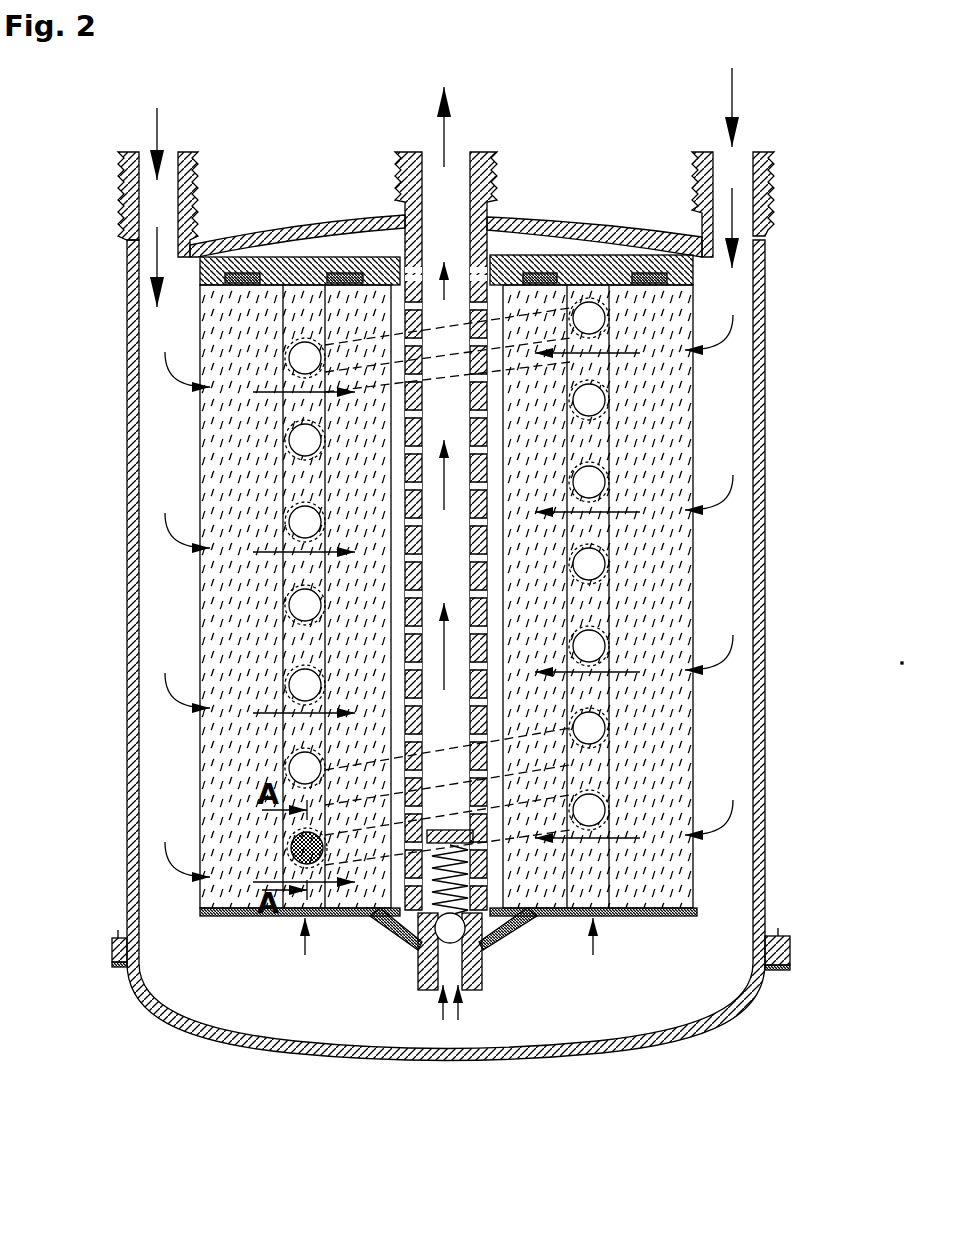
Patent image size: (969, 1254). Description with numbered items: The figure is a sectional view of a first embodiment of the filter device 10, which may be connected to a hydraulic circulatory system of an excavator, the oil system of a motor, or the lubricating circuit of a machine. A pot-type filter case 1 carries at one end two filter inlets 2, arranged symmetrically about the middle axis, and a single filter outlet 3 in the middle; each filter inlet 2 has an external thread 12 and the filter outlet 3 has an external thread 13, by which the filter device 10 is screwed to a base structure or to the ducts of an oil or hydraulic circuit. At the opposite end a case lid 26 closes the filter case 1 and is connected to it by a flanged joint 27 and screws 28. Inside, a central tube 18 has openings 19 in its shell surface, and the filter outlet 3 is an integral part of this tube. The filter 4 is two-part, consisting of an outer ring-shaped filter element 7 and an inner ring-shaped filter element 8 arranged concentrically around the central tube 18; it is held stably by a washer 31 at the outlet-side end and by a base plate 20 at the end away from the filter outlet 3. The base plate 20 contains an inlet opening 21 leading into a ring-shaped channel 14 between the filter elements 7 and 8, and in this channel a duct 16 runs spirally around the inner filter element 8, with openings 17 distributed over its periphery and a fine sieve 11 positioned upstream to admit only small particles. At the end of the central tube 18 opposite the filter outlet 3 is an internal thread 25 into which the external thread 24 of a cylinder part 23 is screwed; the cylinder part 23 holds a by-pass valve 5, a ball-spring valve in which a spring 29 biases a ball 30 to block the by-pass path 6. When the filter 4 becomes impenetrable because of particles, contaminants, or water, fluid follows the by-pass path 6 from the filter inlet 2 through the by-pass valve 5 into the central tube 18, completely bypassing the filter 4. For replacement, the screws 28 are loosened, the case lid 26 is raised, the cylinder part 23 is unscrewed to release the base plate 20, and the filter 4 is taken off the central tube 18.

The filter case 1 is at (762, 400).
The filter inlet 2 is at (158, 125).
The filter outlet 3 is at (446, 135).
The filter 4 is at (205, 470).
The by-pass valve 5 is at (434, 933).
The by-pass path 6 is at (440, 1010).
The outer filter element 7 is at (215, 637).
The inner filter element 8 is at (560, 590).
The filter device 10 is at (612, 102).
The sieve 11 is at (293, 842).
The external thread 12 is at (195, 185).
The external thread 13 is at (478, 515).
The ring-shaped channel 14 is at (302, 948).
The duct 16 is at (605, 455).
The openings 17 is at (305, 563).
The central tube 18 is at (488, 205).
The openings 19 is at (472, 572).
The base plate 20 is at (233, 916).
The inlet opening 21 is at (322, 917).
The cylinder part 23 is at (422, 966).
The external thread 24 is at (480, 905).
The internal thread 25 is at (483, 925).
The case lid 26 is at (278, 1058).
The flanged joint 27 is at (115, 932).
The screws 28 is at (118, 975).
The spring 29 is at (417, 944).
The ball 30 is at (475, 970).
The washer 31 is at (296, 266).